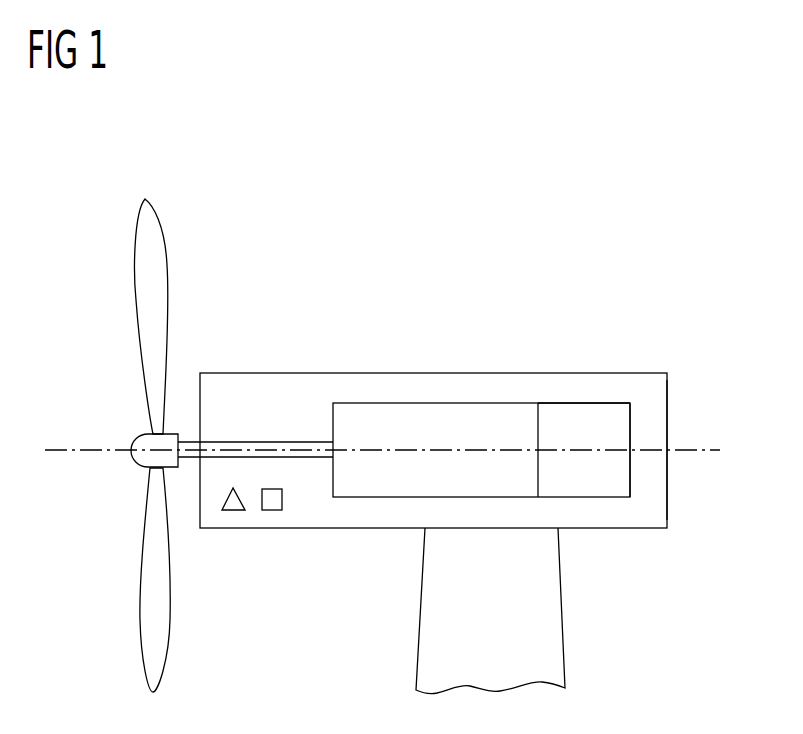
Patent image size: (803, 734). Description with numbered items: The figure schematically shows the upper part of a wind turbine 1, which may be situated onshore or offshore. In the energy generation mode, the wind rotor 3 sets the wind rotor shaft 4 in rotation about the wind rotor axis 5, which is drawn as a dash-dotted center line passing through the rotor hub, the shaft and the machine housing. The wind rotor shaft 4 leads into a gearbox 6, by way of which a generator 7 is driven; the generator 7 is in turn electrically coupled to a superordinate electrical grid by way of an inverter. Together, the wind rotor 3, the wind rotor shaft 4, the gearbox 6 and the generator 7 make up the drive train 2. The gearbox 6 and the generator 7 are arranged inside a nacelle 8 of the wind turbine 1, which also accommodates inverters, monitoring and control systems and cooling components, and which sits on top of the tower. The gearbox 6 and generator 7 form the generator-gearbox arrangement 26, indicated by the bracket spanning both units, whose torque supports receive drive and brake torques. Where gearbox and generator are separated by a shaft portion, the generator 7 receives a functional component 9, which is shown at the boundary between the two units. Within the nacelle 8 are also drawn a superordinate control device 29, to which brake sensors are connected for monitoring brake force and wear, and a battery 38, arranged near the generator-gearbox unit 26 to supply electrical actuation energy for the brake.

The wind turbine 1 is at (512, 186).
The drive train 2 is at (314, 401).
The wind rotor 3 is at (136, 271).
The wind rotor shaft 4 is at (247, 442).
The wind rotor axis 5 is at (96, 448).
The gearbox 6 is at (398, 403).
The generator 7 is at (600, 413).
The nacelle 8 is at (667, 400).
The functional component 9 is at (538, 425).
The generator-gearbox arrangement 26 is at (632, 283).
The superordinate control device 29 is at (272, 512).
The battery 38 is at (233, 512).